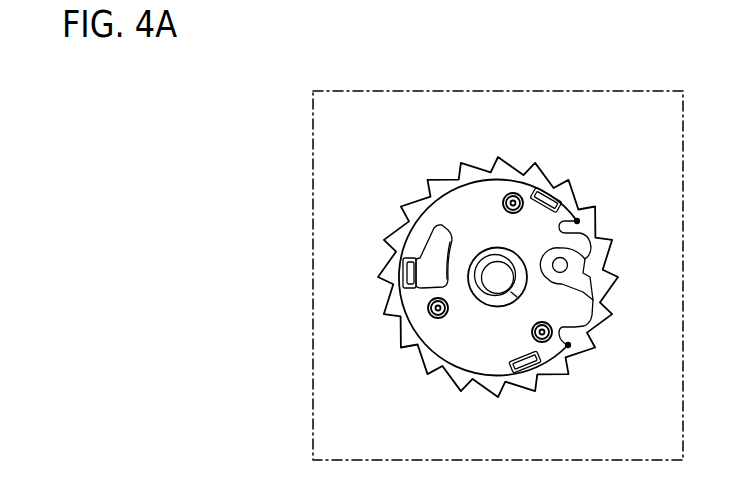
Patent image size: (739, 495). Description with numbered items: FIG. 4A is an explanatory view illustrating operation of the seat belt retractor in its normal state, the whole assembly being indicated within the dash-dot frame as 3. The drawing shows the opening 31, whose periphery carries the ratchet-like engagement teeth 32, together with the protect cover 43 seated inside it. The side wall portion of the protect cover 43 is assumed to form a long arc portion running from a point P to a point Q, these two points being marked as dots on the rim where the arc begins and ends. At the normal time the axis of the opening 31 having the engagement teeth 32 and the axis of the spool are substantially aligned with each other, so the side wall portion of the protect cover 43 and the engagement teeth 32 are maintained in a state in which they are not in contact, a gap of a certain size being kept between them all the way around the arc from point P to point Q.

The ratchet wheel unit 3 is at (644, 136).
The opening 31 is at (396, 219).
The engagement teeth 32 is at (397, 296).
The protect cover 43 is at (493, 340).
The point P is at (579, 221).
The point Q is at (569, 347).